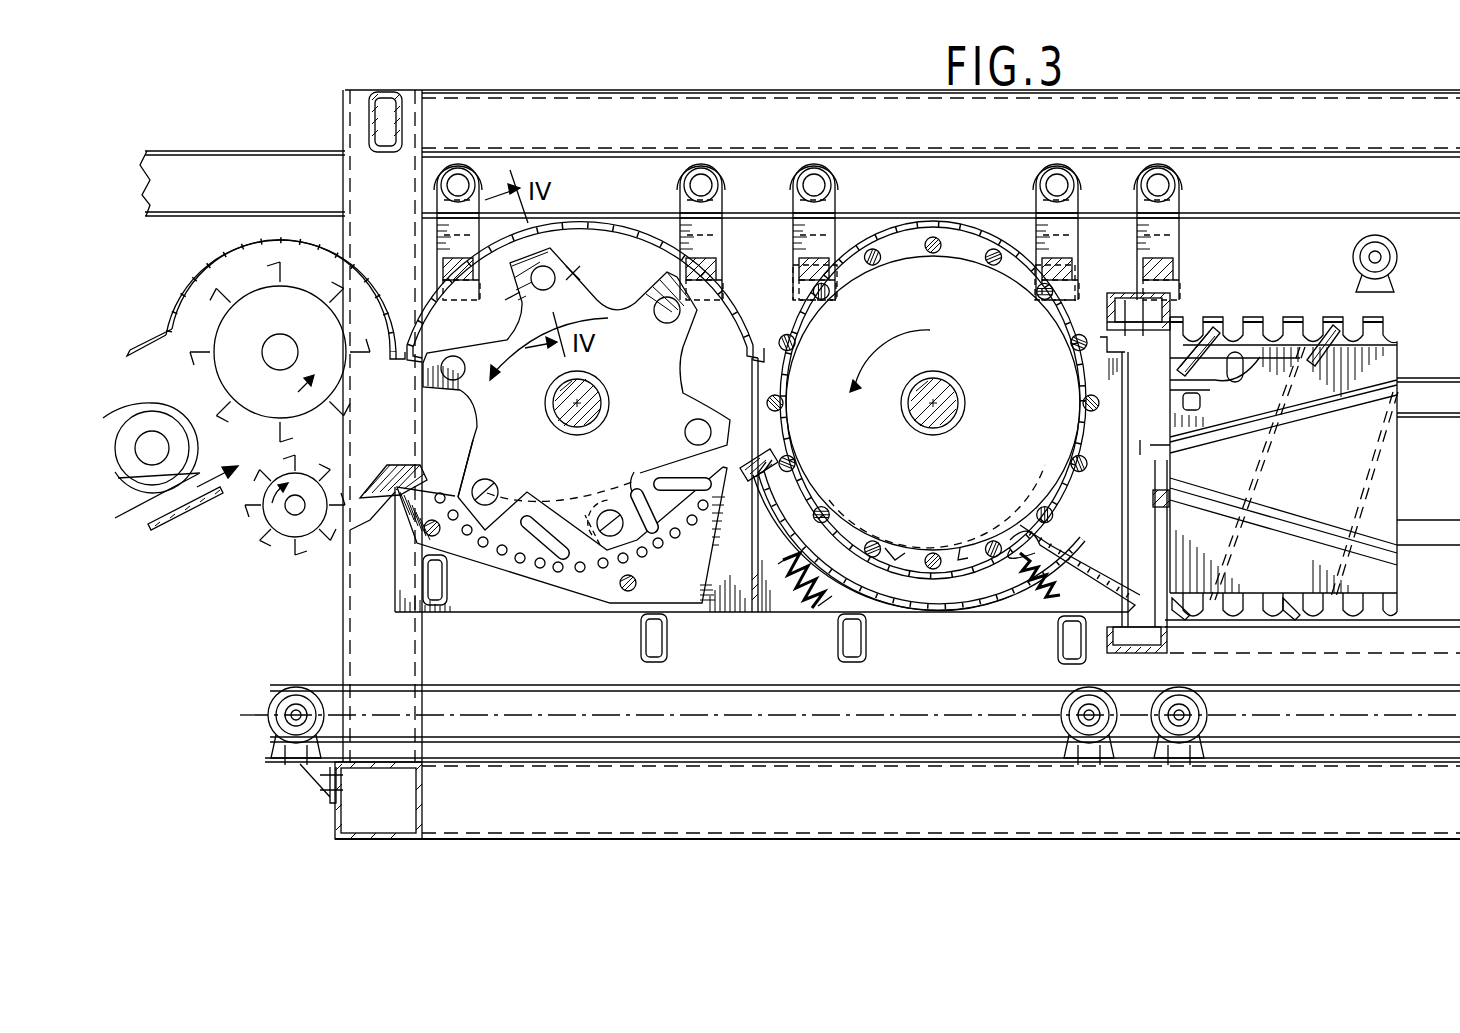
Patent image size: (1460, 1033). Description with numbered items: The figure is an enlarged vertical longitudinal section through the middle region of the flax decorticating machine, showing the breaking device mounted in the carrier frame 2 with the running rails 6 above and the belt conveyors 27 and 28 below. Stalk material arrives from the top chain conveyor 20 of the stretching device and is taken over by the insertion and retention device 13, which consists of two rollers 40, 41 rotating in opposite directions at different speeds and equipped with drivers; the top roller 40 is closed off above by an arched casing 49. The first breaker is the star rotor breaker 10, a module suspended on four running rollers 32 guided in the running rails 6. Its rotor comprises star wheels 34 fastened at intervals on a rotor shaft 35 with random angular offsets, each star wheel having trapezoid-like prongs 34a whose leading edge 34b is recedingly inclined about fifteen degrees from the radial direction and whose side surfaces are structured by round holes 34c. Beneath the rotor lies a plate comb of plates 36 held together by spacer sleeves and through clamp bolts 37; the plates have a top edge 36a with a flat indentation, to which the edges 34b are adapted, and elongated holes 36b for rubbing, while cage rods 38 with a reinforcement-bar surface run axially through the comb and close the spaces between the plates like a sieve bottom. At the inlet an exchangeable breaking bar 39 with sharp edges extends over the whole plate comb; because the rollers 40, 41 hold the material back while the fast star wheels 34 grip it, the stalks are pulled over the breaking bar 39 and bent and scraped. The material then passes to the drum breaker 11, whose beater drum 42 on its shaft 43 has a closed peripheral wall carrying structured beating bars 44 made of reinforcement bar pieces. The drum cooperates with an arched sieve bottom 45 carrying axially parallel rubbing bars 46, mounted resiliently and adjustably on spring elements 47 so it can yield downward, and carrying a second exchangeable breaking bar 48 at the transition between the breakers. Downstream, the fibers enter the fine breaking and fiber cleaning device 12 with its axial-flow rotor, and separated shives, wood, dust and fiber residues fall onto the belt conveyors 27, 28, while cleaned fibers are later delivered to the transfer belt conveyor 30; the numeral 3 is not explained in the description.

The carrier frame 2 is at (292, 632).
The machine frame 3 is at (1340, 115).
The running rails 6 is at (236, 165).
The star rotor breaker 10 is at (608, 187).
The drum breaker 11 is at (951, 193).
The fine breaking and fiber cleaning device 12 is at (1289, 198).
The insertion and retention device 13 is at (195, 300).
The chain conveyor 20 is at (140, 505).
The belt conveyor 27 is at (490, 688).
The belt conveyor 28 is at (1300, 715).
The transfer belt conveyor 30 is at (1352, 250).
The running rollers 32 is at (459, 162).
The star wheels 34 is at (665, 372).
The prongs 34a is at (573, 280).
The edge 34b is at (520, 277).
The round holes 34c is at (490, 485).
The rotor shaft 35 is at (594, 415).
The plates 36 is at (588, 585).
The top edge 36a is at (452, 476).
The elongated holes 36b is at (660, 478).
The clamp bolts 37 is at (634, 579).
The rods 38 is at (502, 556).
The breaking bar 39 is at (385, 465).
The roller 40 is at (215, 366).
The roller 41 is at (255, 527).
The beater drum 42 is at (905, 250).
The shaft 43 is at (950, 412).
The beating bars 44 is at (996, 248).
The arched sieve bottom 45 is at (990, 580).
The rubbing bars 46 is at (948, 577).
The spring elements 47 is at (808, 595).
The breaking bar 48 is at (778, 462).
The arched casing 49 is at (790, 345).